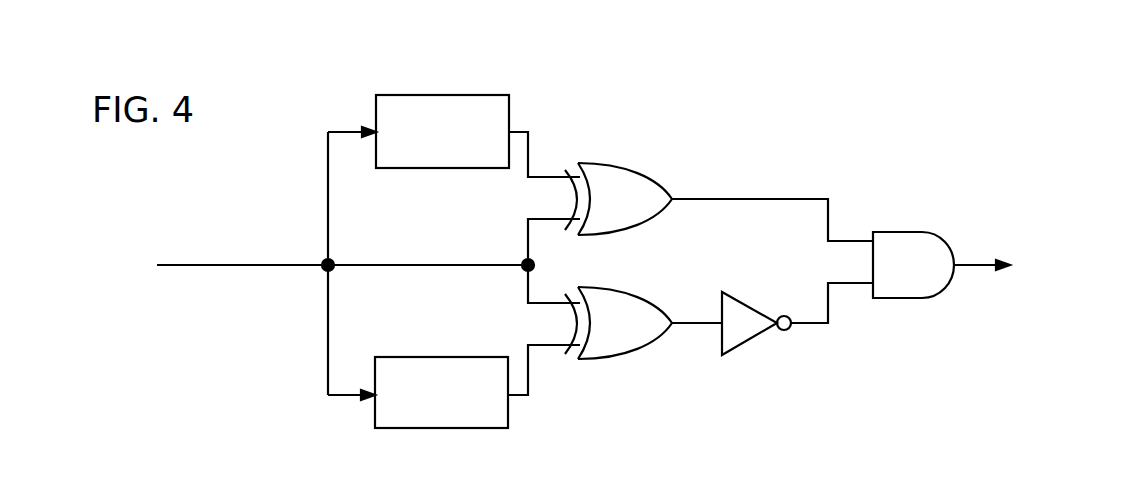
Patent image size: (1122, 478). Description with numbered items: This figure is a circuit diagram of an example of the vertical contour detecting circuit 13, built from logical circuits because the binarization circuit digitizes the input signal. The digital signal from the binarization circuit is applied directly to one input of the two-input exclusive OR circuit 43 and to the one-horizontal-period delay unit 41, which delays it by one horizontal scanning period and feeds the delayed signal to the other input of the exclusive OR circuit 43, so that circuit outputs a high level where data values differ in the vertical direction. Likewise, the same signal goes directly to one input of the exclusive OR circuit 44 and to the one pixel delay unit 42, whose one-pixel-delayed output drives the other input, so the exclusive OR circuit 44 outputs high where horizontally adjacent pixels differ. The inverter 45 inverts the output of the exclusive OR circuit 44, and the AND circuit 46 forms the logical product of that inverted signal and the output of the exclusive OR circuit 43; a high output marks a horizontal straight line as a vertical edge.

The vertical contour detecting circuit 13 is at (598, 20).
The 1H delay unit 41 is at (450, 95).
The one pixel delay unit 42 is at (448, 357).
The exclusive OR circuit 43 is at (615, 163).
The exclusive OR circuit 44 is at (618, 349).
The inverter 45 is at (735, 349).
The AND circuit 46 is at (908, 232).